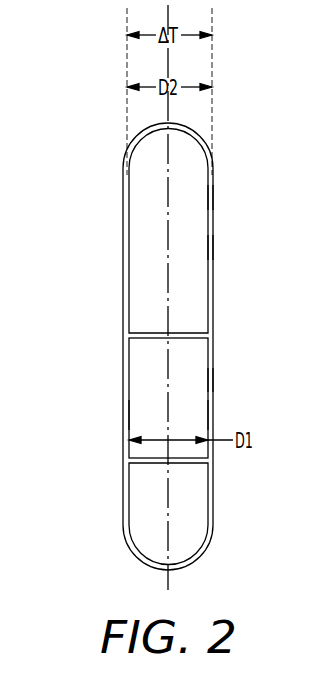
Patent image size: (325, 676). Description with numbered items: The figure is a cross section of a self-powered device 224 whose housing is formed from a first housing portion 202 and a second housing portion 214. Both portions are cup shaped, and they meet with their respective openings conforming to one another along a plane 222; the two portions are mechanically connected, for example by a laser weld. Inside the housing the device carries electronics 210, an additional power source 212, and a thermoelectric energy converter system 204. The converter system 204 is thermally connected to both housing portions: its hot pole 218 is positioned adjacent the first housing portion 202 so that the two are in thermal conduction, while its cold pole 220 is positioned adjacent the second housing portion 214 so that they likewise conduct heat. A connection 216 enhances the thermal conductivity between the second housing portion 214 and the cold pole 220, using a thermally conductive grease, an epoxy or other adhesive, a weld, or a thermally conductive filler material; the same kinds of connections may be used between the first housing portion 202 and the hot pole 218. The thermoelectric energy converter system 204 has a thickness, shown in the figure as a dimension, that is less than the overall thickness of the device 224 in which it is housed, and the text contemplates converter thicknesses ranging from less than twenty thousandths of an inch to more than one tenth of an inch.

The first housing portion 202 is at (123, 183).
The thermoelectric energy converter system 204 is at (139, 370).
The electronics 210 is at (200, 196).
The additional power source 212 is at (200, 498).
The second housing portion 214 is at (204, 246).
The connection 216 is at (212, 378).
The hot pole 218 is at (131, 416).
The cold pole 220 is at (202, 413).
The plane 222 is at (170, 164).
The self-powered device 224 is at (105, 535).